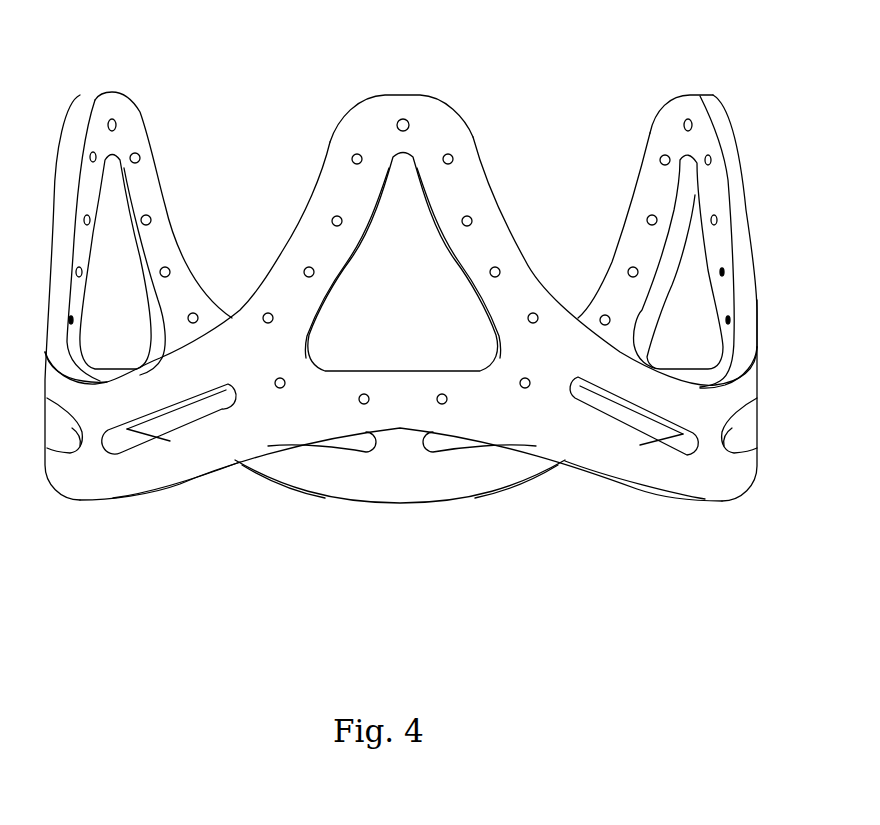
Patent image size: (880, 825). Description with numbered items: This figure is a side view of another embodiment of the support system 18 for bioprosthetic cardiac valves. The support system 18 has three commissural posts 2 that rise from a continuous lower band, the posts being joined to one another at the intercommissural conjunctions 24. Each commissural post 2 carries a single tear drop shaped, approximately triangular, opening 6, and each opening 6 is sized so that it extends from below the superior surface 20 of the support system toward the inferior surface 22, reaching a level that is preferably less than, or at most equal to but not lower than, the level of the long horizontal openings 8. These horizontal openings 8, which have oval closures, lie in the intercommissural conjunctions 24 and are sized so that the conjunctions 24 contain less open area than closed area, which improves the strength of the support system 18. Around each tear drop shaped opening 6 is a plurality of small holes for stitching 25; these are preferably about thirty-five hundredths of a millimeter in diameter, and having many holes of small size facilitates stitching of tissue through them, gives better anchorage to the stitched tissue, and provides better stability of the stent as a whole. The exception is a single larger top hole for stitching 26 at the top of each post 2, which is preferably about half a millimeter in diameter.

The commissural posts 2 is at (85, 87).
The tear drop shaped openings in the commissural posts 6 is at (401, 264).
The long horizontal openings with oval closures at the intercommissural conjunctions 8 is at (400, 416).
The support system for bioprosthetic cardiac valves 18 is at (630, 132).
The superior surface of the support system 20 is at (750, 232).
The inferior surface of the support system 22 is at (680, 502).
The intercommissural conjunction 24 is at (733, 400).
The small holes for stitching 25 is at (139, 160).
The single top hole for stitching 26 is at (402, 116).